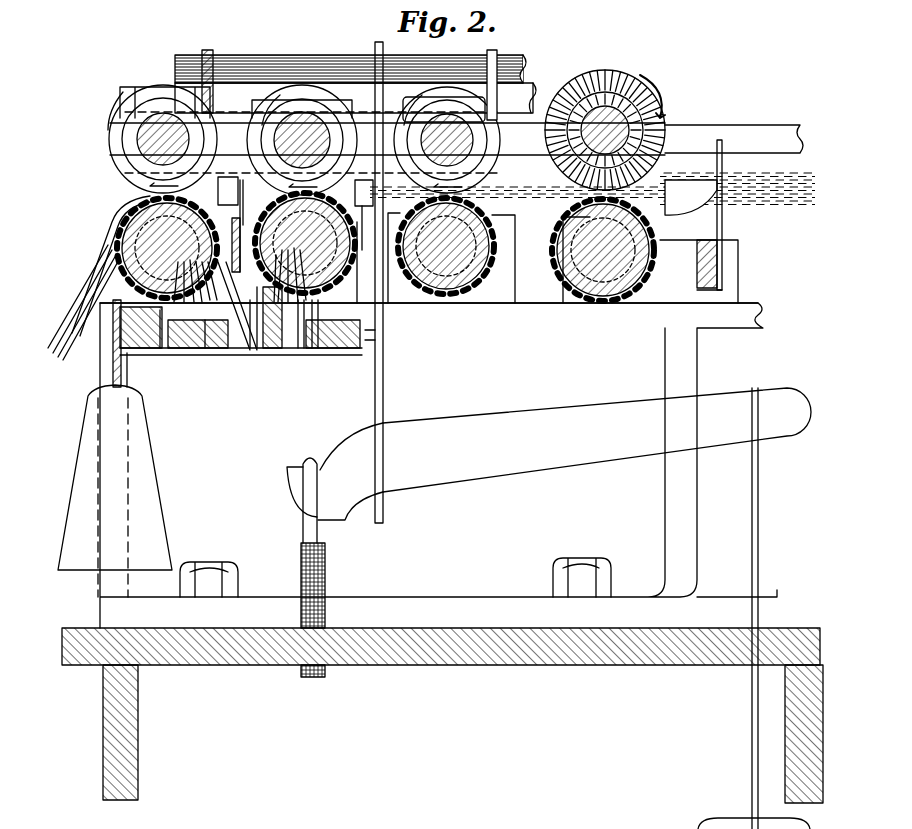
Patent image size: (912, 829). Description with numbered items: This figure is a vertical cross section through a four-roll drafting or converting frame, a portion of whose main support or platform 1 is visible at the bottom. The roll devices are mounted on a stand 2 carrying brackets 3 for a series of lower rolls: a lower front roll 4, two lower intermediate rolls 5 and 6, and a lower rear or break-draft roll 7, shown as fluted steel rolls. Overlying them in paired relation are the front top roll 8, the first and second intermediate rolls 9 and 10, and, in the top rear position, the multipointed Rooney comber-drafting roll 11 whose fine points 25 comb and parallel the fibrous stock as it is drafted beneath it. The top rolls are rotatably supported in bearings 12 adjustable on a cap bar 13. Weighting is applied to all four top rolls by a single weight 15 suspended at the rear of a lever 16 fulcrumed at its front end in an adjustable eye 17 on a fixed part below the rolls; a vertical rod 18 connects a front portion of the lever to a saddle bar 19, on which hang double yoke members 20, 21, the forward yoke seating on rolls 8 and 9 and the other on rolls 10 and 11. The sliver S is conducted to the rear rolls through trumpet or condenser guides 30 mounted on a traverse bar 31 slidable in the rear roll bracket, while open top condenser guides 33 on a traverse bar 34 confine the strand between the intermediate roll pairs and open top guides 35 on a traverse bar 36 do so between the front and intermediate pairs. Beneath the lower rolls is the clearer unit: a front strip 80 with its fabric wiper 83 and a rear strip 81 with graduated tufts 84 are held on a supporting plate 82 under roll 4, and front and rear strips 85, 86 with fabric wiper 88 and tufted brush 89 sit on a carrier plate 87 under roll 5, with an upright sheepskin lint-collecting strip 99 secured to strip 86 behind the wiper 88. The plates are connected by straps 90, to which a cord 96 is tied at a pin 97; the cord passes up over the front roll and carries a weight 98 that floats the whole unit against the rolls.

The main support or platform 1 is at (503, 662).
The stand 2 is at (556, 318).
The brackets 3 is at (345, 310).
The lower front roll 4 is at (131, 238).
The lower intermediate roll 5 is at (346, 270).
The lower intermediate roll 6 is at (470, 290).
The lower rear or break draft roll 7 is at (560, 222).
The front top roll 8 is at (165, 98).
The first intermediate roll 9 is at (320, 113).
The second intermediate roll 10 is at (406, 122).
The comber-drafting roll 11 is at (658, 92).
The bearings 12 is at (110, 168).
The cap bar 13 is at (741, 131).
The weight 15 is at (735, 820).
The lever 16 is at (570, 462).
The adjustable eye 17 is at (302, 528).
The vertical wire or rod 18 is at (384, 398).
The saddle bar 19 is at (284, 62).
The forward yoke 20 is at (242, 100).
The rear yoke 21 is at (520, 104).
The fine points 25 is at (607, 70).
The trumpets or condenser guides 30 is at (720, 222).
The traverse bar 31 is at (697, 270).
The open top condenser guides 33 is at (373, 196).
The traverse bar 34 is at (383, 224).
The open top guides 35 is at (238, 183).
The traverse bar 36 is at (253, 202).
The front strip 80 is at (135, 357).
The rear strip 81 is at (195, 357).
The supporting plate 82 is at (160, 357).
The fabric wiper piece 83 is at (126, 320).
The flexible bristles or tufts 84 is at (235, 286).
The front strip 85 is at (300, 357).
The rear strip 86 is at (340, 357).
The carrier plate 87 is at (366, 343).
The fabric wiper 88 is at (272, 357).
The tufted brush element 89 is at (366, 333).
The straps 90 is at (210, 357).
The cord or thong 96 is at (112, 367).
The pin 97 is at (245, 357).
The weight 98 is at (150, 500).
The upright lint-collecting strip 99 is at (315, 357).
The sliver or fibrous stock S is at (793, 216).